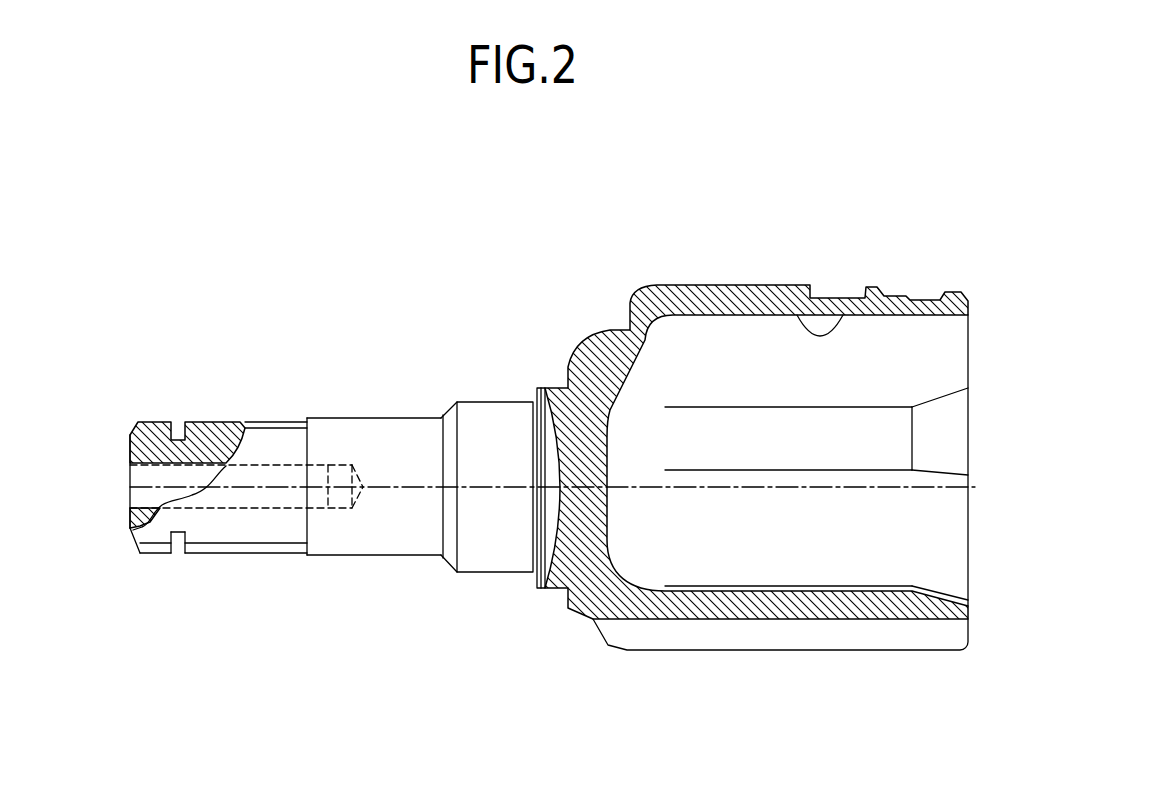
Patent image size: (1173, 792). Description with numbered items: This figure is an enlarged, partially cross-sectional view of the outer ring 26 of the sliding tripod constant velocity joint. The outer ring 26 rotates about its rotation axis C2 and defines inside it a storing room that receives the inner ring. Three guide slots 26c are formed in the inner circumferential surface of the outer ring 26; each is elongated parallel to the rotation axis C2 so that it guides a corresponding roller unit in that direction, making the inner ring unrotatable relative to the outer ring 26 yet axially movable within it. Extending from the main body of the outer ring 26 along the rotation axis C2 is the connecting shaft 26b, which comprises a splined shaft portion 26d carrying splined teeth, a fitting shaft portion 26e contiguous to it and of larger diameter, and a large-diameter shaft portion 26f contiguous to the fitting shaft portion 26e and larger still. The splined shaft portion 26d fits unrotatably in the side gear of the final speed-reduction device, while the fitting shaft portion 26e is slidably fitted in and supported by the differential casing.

The outer ring 26 is at (566, 258).
The connecting shaft 26b is at (311, 656).
The guide slots 26c is at (838, 318).
The splined shaft portion 26d is at (235, 533).
The fitting shaft portion 26e is at (370, 535).
The large-diameter shaft portion 26f is at (492, 535).
The rotation axis C2 is at (750, 489).